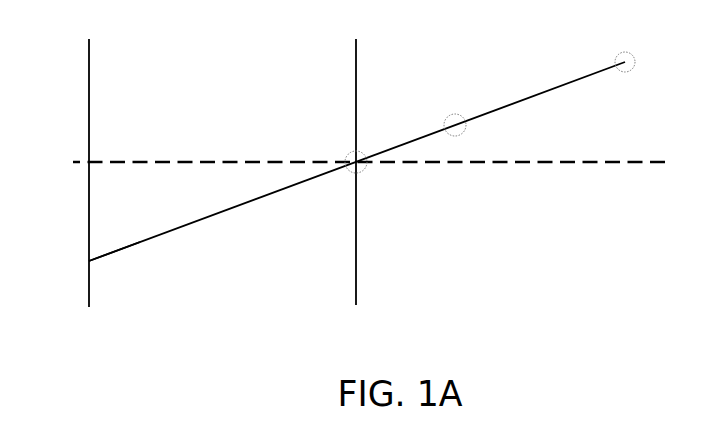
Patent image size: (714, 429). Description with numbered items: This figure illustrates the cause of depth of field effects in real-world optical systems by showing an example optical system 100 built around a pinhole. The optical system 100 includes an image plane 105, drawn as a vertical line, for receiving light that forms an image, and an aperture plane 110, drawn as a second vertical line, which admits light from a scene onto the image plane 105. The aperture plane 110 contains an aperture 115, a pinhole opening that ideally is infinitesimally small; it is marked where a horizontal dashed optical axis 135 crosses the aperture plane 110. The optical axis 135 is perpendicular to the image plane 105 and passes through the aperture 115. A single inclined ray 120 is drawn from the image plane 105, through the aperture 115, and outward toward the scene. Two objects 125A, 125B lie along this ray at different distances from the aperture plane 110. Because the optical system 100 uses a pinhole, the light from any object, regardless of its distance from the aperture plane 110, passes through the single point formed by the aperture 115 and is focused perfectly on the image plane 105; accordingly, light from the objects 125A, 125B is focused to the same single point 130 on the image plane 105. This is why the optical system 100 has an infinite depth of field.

The optical system 100 is at (198, 24).
The image plane 105 is at (86, 195).
The aperture plane 110 is at (354, 197).
The aperture 115 is at (378, 177).
The ray 120 is at (357, 161).
The object 125A is at (432, 108).
The object 125B is at (595, 59).
The single point 130 is at (114, 237).
The optical axis 135 is at (370, 176).